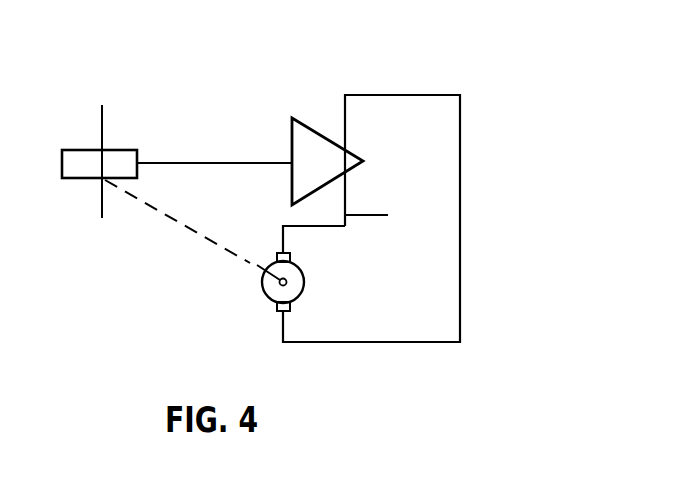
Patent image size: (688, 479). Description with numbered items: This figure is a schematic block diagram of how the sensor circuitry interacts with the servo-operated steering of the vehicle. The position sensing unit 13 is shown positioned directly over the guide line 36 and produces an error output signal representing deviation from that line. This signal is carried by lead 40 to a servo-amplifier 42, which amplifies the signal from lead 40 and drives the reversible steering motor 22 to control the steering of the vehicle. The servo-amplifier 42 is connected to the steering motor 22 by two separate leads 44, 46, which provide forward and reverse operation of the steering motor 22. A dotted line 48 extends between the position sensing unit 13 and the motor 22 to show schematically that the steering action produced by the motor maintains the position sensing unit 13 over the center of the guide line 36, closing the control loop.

The position sensing unit 13 is at (82, 178).
The guide line 36 is at (102, 116).
The lead 40 is at (209, 163).
The servo-amplifier 42 is at (310, 125).
The lead 44 is at (410, 95).
The lead 46 is at (381, 216).
The reversible steering motor 22 is at (305, 280).
The dotted line 48 is at (213, 245).